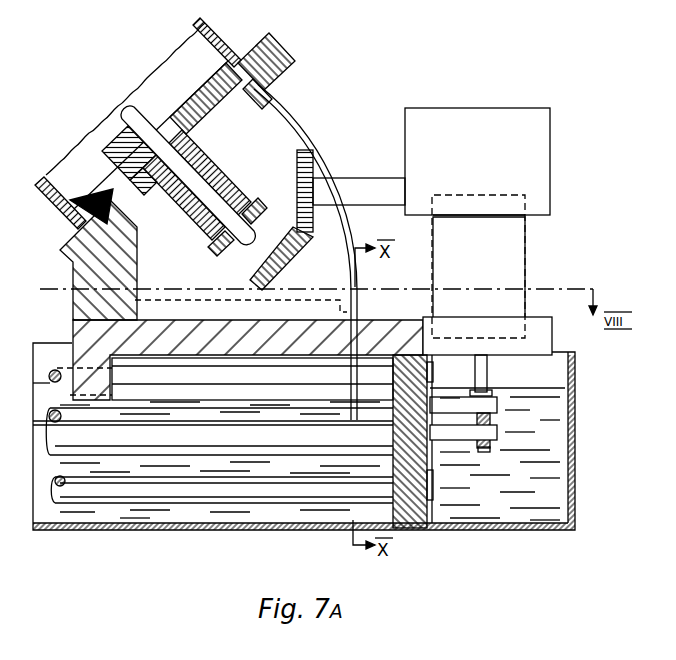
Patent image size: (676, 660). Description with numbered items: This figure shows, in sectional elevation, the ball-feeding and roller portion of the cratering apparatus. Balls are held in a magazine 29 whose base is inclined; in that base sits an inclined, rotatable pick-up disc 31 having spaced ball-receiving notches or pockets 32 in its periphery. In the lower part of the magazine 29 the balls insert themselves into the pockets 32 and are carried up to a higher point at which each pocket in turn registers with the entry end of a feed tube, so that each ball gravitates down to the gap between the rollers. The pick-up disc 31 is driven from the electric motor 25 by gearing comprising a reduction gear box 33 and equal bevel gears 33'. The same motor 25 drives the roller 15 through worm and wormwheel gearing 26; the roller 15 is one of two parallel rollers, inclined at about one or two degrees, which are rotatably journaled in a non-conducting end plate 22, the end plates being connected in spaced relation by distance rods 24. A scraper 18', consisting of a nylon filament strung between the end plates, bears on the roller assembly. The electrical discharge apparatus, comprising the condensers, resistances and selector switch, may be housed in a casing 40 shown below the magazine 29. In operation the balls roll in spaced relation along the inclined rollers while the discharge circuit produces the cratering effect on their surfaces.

The magazine 29 is at (62, 176).
The pick-up disc 31 is at (162, 196).
The ball-receiving notches or pockets 32 is at (128, 239).
The reduction gear box 33 is at (431, 161).
The equal bevel gears 33' is at (288, 220).
The electric motor 25 is at (433, 273).
The casing 40 is at (359, 303).
The distance rods 24 is at (65, 372).
The scraper 18' is at (213, 441).
The roller 15 is at (274, 453).
The end plate 22 is at (430, 512).
The worm and wormwheel gearing 26 is at (497, 430).